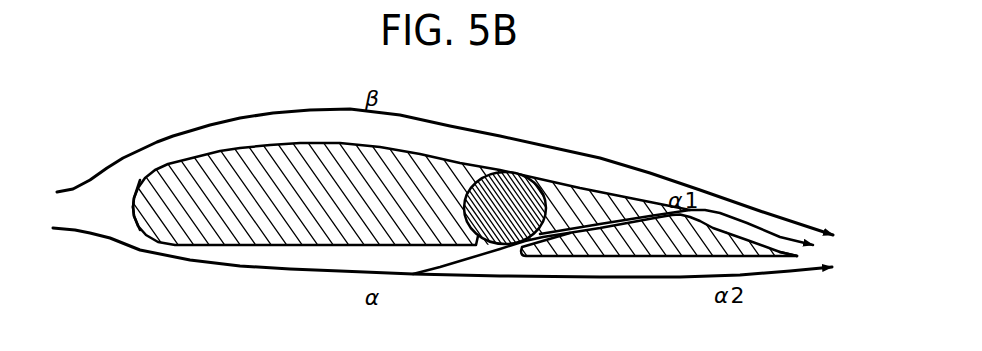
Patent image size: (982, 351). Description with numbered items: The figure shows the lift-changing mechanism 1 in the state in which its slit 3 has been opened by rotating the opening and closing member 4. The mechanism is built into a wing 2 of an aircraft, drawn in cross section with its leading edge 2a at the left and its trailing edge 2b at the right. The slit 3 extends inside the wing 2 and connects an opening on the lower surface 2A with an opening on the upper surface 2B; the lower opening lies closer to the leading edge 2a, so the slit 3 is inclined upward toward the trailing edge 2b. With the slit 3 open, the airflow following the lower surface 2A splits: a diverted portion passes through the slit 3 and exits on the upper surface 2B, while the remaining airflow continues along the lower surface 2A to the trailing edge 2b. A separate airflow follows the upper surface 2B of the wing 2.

The lift-changing mechanism 1 is at (623, 140).
The wing 2 is at (436, 175).
The lower surface 2A is at (212, 245).
The upper surface 2B is at (283, 142).
The leading edge 2a is at (128, 206).
The trailing edge 2b is at (800, 255).
The slit 3 is at (622, 232).
The opening and closing member 4 is at (512, 190).